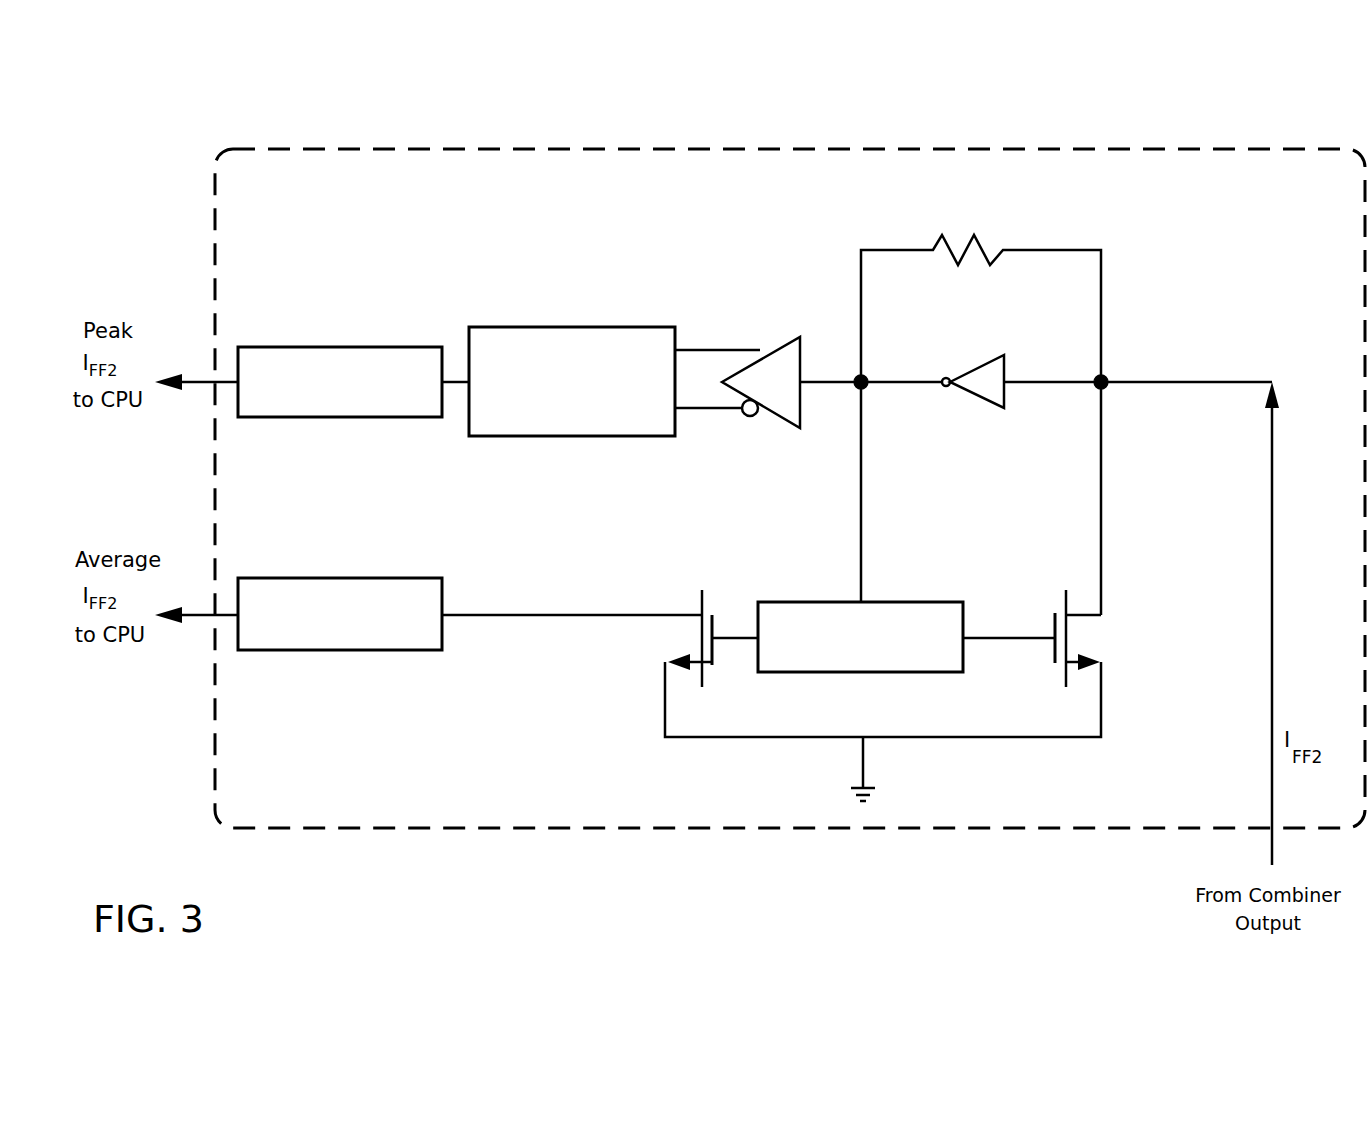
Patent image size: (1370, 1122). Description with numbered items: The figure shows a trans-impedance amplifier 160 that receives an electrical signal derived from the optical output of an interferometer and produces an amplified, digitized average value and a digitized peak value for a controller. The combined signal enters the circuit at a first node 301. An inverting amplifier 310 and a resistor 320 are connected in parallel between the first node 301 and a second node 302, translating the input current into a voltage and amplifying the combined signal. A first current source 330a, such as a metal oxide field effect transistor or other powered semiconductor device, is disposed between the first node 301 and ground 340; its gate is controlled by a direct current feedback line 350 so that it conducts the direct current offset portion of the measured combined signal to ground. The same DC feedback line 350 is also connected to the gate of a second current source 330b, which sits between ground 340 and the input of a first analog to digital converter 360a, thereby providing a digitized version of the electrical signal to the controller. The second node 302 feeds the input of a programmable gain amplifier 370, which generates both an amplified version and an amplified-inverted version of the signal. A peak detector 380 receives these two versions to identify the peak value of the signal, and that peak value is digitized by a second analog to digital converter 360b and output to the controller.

The trans-impedance amplifier 160 is at (1202, 108).
The first node 301 is at (1105, 378).
The second node 302 is at (866, 388).
The inverting amplifier 310 is at (1008, 380).
The resistor 320 is at (993, 245).
The first current source 330a is at (1066, 675).
The second current source 330b is at (703, 600).
The ground 340 is at (853, 790).
The DC feedback line 350 is at (860, 637).
The first analog to digital converter 360a is at (340, 614).
The second analog to digital converter 360b is at (340, 382).
The programmable gain amplifier 370 is at (781, 345).
The peak detector 380 is at (572, 381).